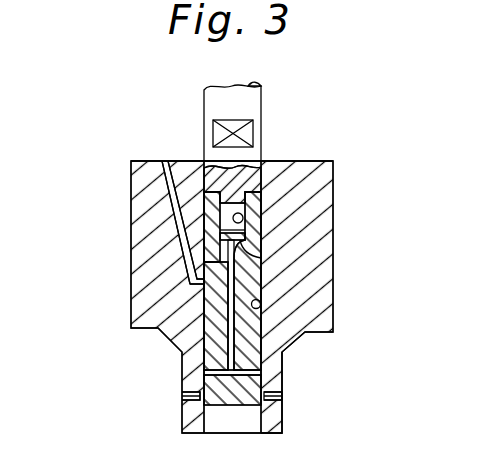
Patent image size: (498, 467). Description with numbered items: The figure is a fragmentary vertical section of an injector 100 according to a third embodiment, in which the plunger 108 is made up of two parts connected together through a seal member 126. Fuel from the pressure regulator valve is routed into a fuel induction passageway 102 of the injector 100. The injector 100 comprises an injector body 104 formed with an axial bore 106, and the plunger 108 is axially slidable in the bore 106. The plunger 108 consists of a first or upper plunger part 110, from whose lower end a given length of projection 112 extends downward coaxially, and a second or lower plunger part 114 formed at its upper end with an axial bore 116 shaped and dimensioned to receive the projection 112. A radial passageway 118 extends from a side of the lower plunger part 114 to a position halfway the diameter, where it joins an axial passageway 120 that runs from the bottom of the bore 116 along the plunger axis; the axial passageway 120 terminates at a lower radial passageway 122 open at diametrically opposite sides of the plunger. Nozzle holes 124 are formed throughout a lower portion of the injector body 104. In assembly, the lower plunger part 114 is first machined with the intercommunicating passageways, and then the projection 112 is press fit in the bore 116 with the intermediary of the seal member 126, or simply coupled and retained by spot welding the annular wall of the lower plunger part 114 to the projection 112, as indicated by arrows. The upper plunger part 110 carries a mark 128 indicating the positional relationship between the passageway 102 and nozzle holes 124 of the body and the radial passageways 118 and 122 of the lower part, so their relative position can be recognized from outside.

The injector 100 is at (377, 116).
The fuel induction passageway 102 is at (176, 200).
The injector body 104 is at (319, 163).
The axial bore 106 is at (262, 305).
The plunger 108 is at (274, 282).
The upper plunger part 110 is at (214, 108).
The projection 112 is at (262, 190).
The lower plunger part 114 is at (284, 350).
The axial bore 116 is at (250, 218).
The radial passageway 118 is at (172, 256).
The axial passageway 120 is at (204, 305).
The lower radial passageway 122 is at (207, 363).
The nozzle holes 124 is at (183, 398).
The seal member 126 is at (248, 240).
The mark 128 is at (254, 131).